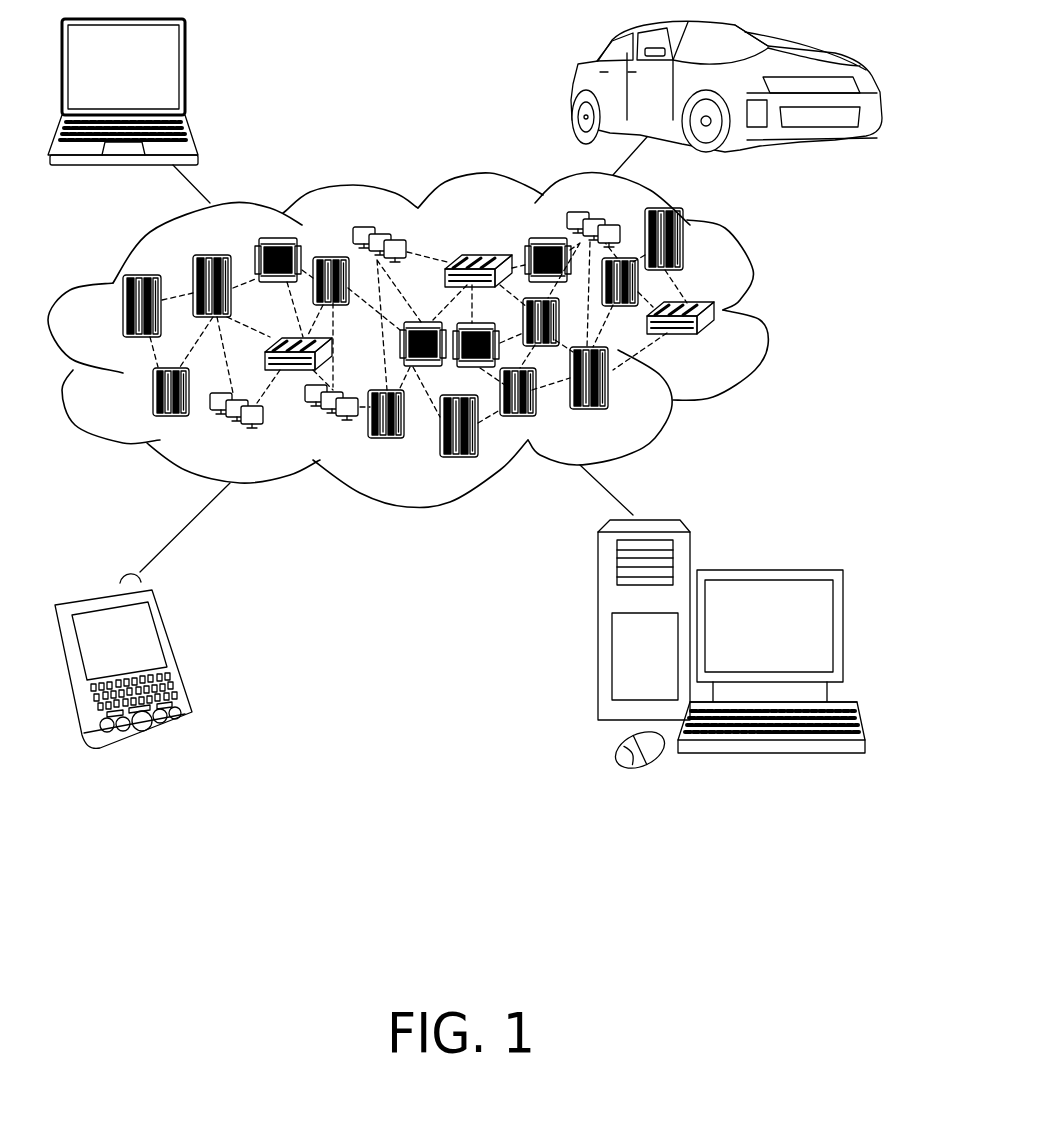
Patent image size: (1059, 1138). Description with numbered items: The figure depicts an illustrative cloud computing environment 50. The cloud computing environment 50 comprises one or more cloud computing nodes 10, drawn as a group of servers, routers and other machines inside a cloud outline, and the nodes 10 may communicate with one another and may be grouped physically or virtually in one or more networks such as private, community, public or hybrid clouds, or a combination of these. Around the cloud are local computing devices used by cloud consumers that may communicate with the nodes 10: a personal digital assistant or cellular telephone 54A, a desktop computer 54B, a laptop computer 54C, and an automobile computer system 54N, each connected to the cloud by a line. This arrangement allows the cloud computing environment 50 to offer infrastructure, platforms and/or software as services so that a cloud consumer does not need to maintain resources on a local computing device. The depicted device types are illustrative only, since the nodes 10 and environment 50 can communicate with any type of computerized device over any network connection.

The cloud computing nodes 10 is at (715, 342).
The cloud computing environment 50 is at (768, 316).
The personal digital assistant or cellular telephone 54A is at (177, 653).
The desktop computer 54B is at (767, 569).
The laptop computer 54C is at (185, 73).
The automobile computer system 54N is at (572, 90).